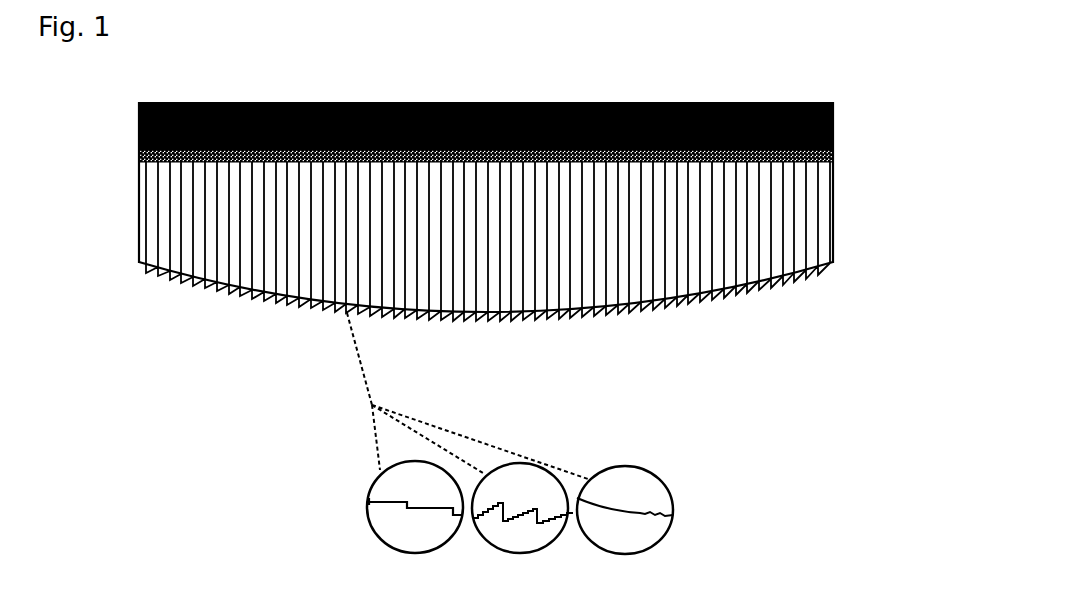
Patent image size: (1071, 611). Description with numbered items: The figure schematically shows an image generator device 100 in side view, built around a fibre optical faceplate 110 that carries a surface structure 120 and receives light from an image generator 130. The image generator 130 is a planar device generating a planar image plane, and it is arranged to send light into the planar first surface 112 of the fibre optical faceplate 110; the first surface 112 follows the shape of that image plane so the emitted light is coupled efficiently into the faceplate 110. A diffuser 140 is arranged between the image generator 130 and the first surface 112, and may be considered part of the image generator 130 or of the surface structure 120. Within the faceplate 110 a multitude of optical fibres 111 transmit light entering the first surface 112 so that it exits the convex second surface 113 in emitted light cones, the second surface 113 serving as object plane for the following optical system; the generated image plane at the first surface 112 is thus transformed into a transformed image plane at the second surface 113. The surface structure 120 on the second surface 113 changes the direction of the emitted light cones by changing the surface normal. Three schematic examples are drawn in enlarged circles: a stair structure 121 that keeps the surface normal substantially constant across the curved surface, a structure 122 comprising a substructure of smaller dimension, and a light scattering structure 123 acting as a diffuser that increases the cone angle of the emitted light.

The image generator device 100 is at (396, 78).
The fibre optical faceplate 110 is at (139, 220).
The optical fibres 111 is at (480, 302).
The first surface 112 is at (821, 166).
The second surface 113 is at (832, 262).
The surface structure 120 is at (141, 271).
The stair structure 121 is at (367, 522).
The structure comprising a substructure of smaller dimension 122 is at (507, 464).
The light scattering structure 123 is at (673, 497).
The image generator 130 is at (139, 117).
The diffuser 140 is at (139, 157).